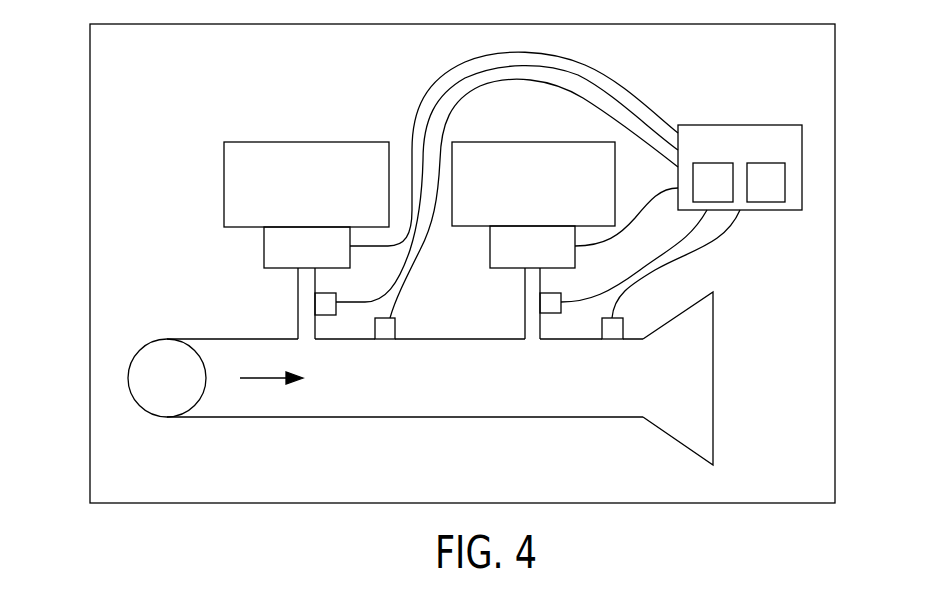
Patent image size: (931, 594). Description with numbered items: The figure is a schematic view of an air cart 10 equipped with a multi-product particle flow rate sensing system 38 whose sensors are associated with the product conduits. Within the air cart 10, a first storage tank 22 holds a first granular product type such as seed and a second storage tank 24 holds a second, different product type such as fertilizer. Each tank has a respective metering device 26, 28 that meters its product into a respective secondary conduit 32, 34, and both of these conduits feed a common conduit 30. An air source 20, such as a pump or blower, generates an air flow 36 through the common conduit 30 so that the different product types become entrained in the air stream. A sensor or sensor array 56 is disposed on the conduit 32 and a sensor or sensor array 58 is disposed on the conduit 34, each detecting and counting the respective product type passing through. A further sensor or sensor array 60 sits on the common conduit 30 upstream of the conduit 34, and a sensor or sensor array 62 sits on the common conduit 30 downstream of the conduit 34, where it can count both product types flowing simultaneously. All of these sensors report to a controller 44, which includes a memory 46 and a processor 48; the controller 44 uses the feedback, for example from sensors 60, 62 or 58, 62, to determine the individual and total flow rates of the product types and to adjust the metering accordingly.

The air cart 10 is at (90, 144).
The air source 20 is at (141, 348).
The first storage tank 22 is at (307, 142).
The second storage tank 24 is at (533, 142).
The metering device 26 is at (264, 247).
The metering device 28 is at (490, 245).
The common conduit 30 is at (403, 417).
The conduit 32 is at (298, 305).
The conduit 34 is at (525, 302).
The air flow 36 is at (264, 379).
The multi-product particle flow rate sensing system 38 is at (700, 286).
The controller 44 is at (770, 125).
The memory 46 is at (717, 163).
The processor 48 is at (768, 163).
The sensor or sensor array 56 is at (325, 315).
The sensor or sensor array 58 is at (549, 313).
The sensor or sensor array 60 is at (395, 326).
The sensor or sensor array 62 is at (623, 326).